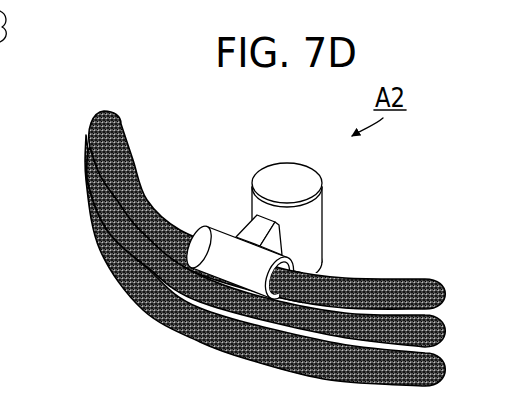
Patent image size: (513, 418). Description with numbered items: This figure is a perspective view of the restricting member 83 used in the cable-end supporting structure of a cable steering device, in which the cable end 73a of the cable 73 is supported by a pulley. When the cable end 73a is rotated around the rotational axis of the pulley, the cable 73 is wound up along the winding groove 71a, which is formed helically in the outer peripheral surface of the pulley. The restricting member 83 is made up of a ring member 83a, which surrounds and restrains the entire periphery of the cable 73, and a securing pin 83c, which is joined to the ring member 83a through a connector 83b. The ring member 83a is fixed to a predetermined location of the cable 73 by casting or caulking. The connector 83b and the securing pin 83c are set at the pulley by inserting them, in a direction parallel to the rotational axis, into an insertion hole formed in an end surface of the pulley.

The winding groove 71a is at (7, 23).
The cable 73 is at (229, 247).
The cable end 73a is at (132, 168).
The restricting member 83 is at (267, 199).
The ring member 83a is at (212, 238).
The connector 83b is at (242, 229).
The securing pin 83c is at (307, 182).